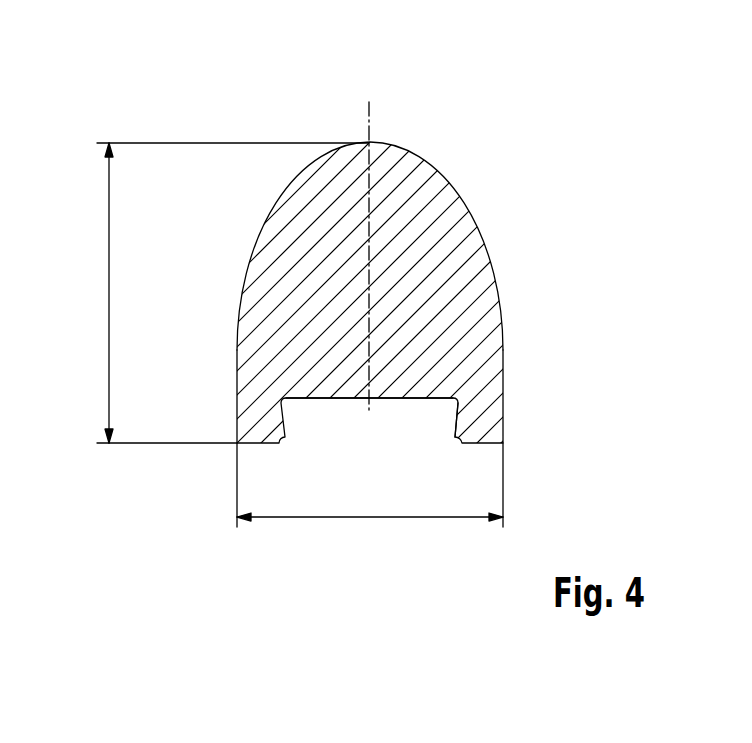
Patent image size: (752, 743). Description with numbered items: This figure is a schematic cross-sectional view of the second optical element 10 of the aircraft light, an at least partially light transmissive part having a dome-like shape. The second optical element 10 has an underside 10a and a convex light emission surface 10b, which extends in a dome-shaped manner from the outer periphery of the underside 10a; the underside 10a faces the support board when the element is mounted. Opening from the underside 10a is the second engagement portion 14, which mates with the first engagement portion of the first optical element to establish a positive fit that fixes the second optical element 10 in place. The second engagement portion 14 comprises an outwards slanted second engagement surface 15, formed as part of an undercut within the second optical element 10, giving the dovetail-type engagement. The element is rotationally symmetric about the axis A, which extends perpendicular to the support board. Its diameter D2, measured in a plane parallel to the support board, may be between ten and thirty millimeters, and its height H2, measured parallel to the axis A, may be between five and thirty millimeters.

The second optical element 10 is at (390, 277).
The underside 10a is at (254, 456).
The convex light emission surface 10b is at (470, 93).
The second engagement portion 14 is at (376, 430).
The second engagement surface 15 is at (456, 420).
The axis A is at (371, 112).
The height H2 is at (109, 292).
The diameter D2 is at (370, 518).